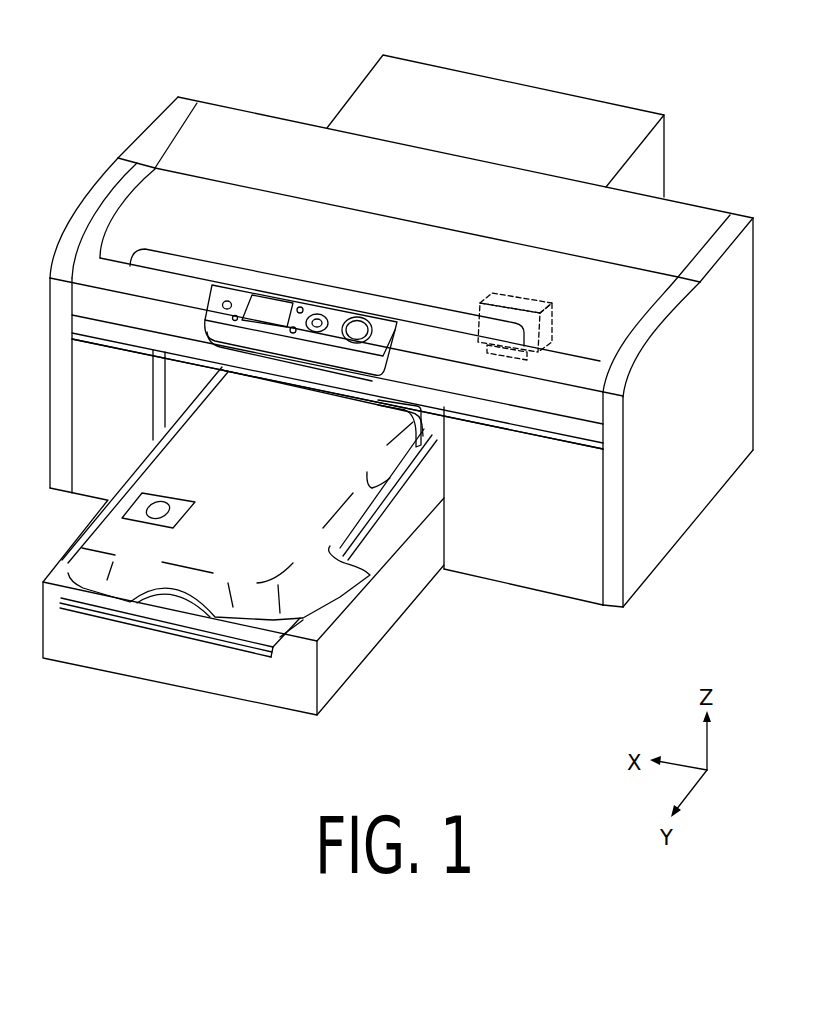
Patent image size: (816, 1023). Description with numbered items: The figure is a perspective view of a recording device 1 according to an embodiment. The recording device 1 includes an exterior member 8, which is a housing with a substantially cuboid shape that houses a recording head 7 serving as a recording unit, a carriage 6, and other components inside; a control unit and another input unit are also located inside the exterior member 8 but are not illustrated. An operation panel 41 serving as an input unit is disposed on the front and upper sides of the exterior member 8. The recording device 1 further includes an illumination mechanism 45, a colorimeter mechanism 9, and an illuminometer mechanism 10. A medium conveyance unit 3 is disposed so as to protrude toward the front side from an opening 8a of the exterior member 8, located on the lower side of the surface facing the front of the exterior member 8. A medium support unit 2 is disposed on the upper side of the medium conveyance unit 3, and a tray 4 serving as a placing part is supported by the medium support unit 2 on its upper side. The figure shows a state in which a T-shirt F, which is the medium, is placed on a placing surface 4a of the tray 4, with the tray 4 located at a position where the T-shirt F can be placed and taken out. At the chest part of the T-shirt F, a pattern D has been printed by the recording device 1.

The recording device 1 is at (712, 58).
The medium support unit 2 is at (208, 627).
The medium conveyance unit 3 is at (343, 667).
The tray 4 is at (424, 422).
The placing surface 4a is at (222, 412).
The illumination mechanism 45 is at (366, 513).
The carriage 6 is at (520, 300).
The recording head 7 is at (528, 358).
The exterior member 8 is at (182, 143).
The opening 8a is at (444, 478).
The colorimeter mechanism 9 is at (317, 392).
The illuminometer mechanism 10 is at (337, 353).
The operation panel 41 is at (338, 298).
The T-shirt F is at (160, 467).
The pattern D is at (140, 510).